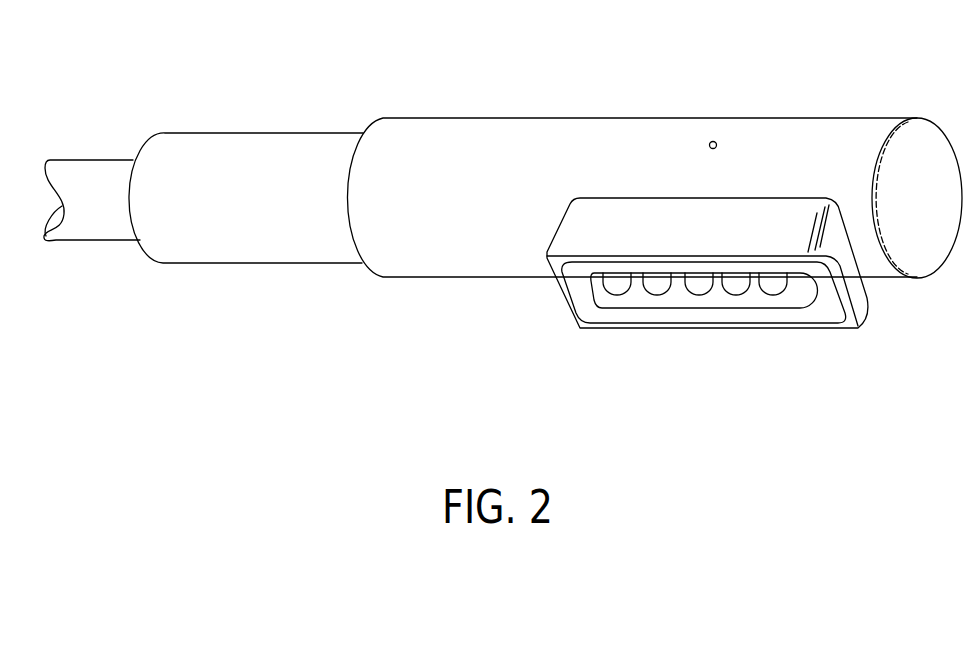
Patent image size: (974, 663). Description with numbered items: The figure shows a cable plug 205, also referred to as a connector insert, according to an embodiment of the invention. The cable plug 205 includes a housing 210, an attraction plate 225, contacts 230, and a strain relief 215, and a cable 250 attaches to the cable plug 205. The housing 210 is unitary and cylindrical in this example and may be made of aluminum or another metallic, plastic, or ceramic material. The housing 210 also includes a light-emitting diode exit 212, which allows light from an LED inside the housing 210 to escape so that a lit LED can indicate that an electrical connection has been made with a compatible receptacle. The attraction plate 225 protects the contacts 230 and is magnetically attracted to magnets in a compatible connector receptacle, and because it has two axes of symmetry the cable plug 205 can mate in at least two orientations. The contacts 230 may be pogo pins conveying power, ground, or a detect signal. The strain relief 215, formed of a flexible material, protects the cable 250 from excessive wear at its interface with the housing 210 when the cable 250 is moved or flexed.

The cable plug 205 is at (555, 64).
The housing 210 is at (845, 140).
The light-emitting diode (LED) exit 212 is at (715, 141).
The strain relief 215 is at (290, 238).
The attraction plate 225 is at (870, 300).
The contacts 230 is at (657, 292).
The cable 250 is at (105, 228).